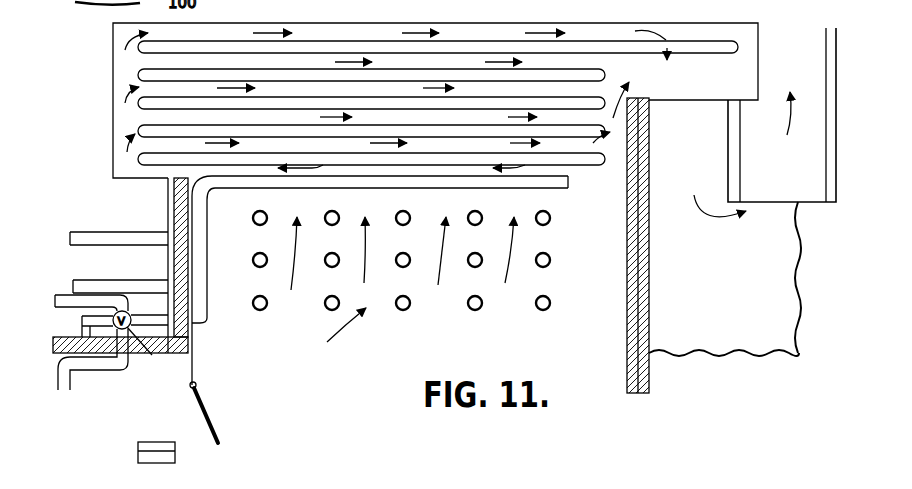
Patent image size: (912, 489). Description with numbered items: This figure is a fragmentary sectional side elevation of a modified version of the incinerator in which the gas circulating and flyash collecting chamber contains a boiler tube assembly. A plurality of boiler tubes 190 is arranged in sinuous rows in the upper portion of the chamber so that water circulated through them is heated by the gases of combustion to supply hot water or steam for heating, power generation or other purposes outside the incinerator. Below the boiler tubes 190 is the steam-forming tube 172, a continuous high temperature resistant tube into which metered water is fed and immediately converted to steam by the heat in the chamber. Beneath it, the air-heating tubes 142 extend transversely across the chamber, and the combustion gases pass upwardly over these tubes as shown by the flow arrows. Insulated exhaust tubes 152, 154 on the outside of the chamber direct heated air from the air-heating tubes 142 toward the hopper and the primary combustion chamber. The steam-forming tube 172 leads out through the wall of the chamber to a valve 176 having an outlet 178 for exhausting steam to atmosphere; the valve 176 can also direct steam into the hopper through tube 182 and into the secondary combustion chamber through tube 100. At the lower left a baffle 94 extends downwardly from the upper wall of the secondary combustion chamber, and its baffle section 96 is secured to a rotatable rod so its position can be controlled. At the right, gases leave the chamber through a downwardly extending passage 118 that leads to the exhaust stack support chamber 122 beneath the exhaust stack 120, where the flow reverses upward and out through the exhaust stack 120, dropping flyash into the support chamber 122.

The boiler tubes 190 is at (398, 100).
The steam-forming tube 172 is at (212, 190).
The air-heating tubes 142 is at (410, 263).
The downwardly extending passage 118 is at (728, 143).
The exhaust stack 120 is at (828, 165).
The exhaust stack support chamber 122 is at (733, 322).
The insulated exhaust tube 152 is at (128, 212).
The insulated exhaust tube 154 is at (128, 262).
The steam tube to hopper 182 is at (60, 295).
The steam outlet 178 is at (80, 320).
The steam valve 176 is at (150, 356).
The steam tube to secondary combustion chamber 100 is at (72, 378).
The baffle 94 is at (195, 357).
The baffle section 96 is at (205, 410).